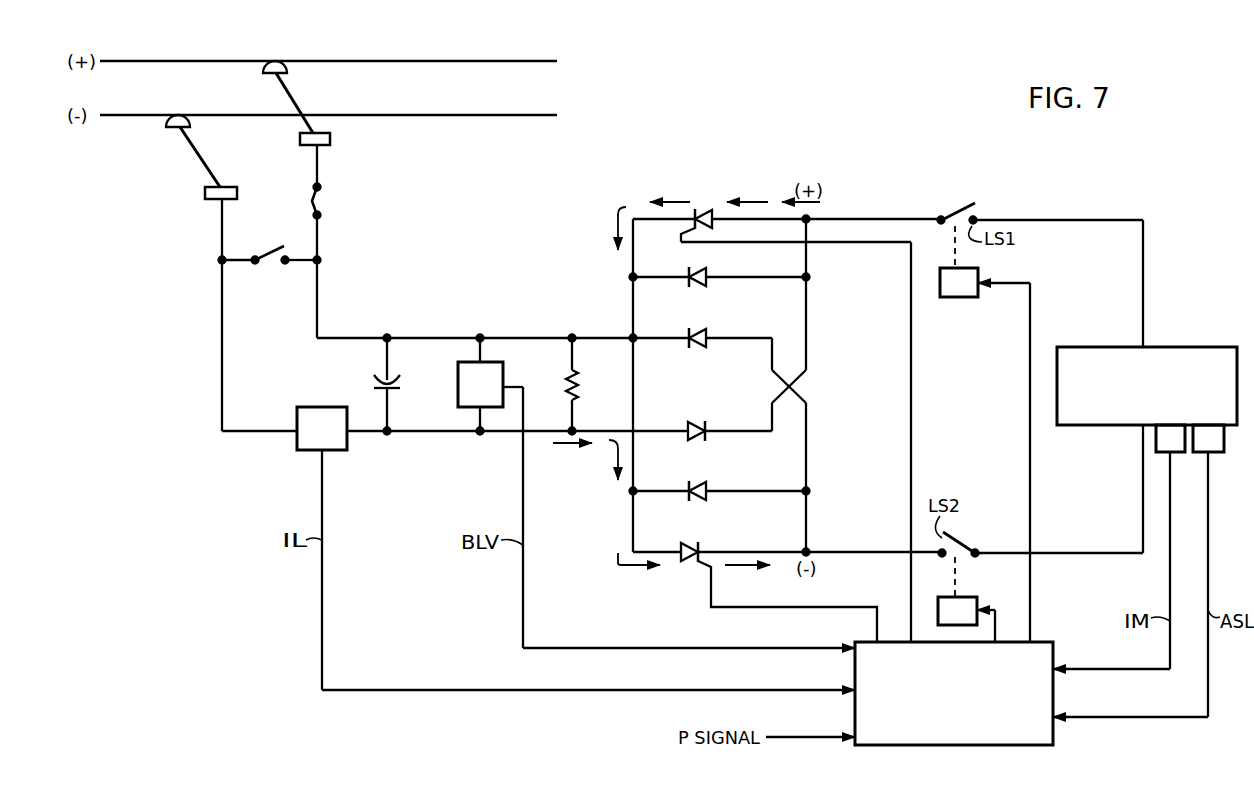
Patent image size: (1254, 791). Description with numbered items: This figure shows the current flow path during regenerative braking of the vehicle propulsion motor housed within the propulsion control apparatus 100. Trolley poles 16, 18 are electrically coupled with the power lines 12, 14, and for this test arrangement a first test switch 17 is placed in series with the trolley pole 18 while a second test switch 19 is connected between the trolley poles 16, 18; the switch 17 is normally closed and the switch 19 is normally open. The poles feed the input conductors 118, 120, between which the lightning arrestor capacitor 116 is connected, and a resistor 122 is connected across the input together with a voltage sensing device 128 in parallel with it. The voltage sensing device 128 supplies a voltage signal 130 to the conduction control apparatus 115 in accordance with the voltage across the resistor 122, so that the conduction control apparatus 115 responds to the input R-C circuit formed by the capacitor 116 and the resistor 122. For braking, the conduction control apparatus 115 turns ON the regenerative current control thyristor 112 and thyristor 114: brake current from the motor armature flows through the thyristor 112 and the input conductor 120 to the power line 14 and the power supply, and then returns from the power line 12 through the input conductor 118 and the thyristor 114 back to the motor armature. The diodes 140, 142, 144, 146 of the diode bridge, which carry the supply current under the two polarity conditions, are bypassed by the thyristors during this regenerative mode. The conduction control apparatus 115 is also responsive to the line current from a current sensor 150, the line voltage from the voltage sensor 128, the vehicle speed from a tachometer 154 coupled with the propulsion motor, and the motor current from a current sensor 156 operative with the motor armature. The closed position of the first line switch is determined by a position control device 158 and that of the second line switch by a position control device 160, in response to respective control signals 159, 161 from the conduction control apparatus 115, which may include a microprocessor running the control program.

The power line 12 is at (494, 115).
The power line 14 is at (504, 61).
The trolley pole 16 is at (196, 156).
The first test switch 17 is at (323, 199).
The trolley pole 18 is at (298, 124).
The second test switch 19 is at (277, 262).
The propulsion control apparatus 100 is at (1182, 331).
The thyristor 112 is at (703, 213).
The thyristor 114 is at (698, 543).
The conduction control apparatus 115 is at (1049, 642).
The lightning arrestor capacitor 116 is at (396, 383).
The input conductor 118 is at (437, 436).
The input conductor 120 is at (446, 338).
The resistor 122 is at (580, 386).
The voltage sensing device 128 is at (503, 365).
The voltage signal 130 is at (523, 579).
The diode 140 is at (689, 268).
The diode 142 is at (689, 482).
The diode 144 is at (699, 423).
The diode 146 is at (689, 329).
The current sensor 150 is at (328, 407).
The tachometer 154 is at (1208, 458).
The current sensor 156 is at (1170, 456).
The position control device 158 is at (960, 297).
The control signal 159 is at (1030, 472).
The position control device 160 is at (980, 598).
The control signal 161 is at (997, 636).